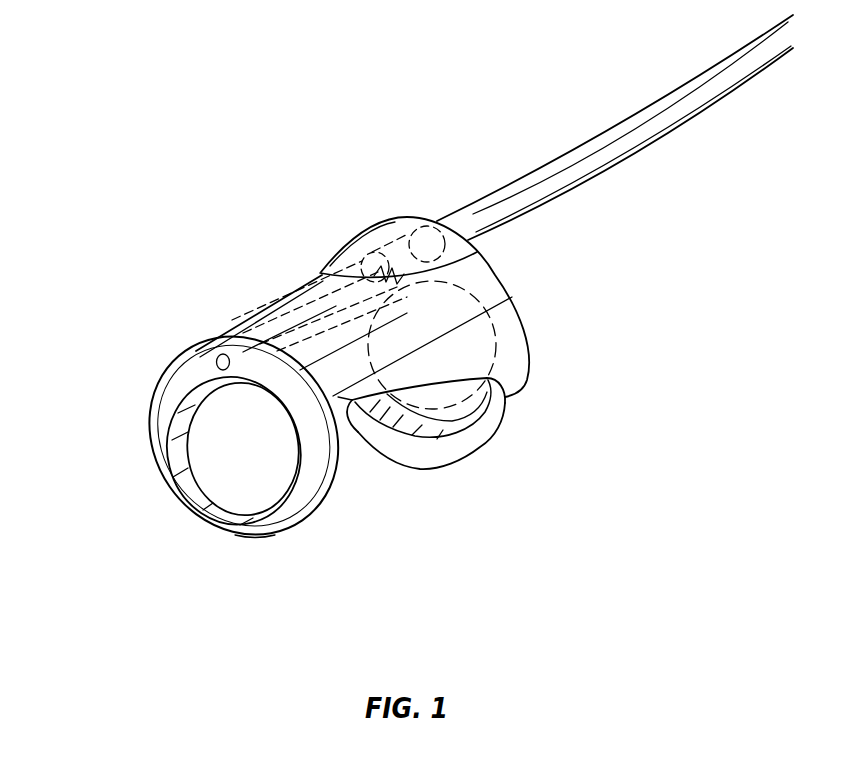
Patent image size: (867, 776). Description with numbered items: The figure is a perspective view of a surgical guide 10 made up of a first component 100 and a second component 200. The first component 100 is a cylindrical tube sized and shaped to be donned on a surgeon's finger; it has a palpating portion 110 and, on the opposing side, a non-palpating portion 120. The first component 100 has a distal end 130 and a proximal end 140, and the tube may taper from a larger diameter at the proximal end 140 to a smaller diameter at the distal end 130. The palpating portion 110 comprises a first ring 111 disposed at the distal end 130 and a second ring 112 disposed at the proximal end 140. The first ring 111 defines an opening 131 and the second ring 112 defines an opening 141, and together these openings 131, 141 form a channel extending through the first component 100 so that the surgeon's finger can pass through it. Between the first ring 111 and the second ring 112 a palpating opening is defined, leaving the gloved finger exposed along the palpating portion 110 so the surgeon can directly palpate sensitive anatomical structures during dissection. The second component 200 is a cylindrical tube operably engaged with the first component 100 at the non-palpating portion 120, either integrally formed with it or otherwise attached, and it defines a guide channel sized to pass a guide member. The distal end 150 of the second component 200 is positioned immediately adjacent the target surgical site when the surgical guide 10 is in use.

The surgical guide 10 is at (260, 100).
The first component 100 is at (193, 348).
The palpating portion 110 is at (305, 520).
The first ring 111 is at (257, 538).
The second ring 112 is at (477, 456).
The non-palpating portion 120 is at (303, 295).
The distal end 130 is at (180, 463).
The opening 131 is at (223, 433).
The proximal end 140 is at (507, 413).
The opening 141 is at (453, 400).
The distal end of second component 150 is at (221, 355).
The second component 200 is at (637, 133).